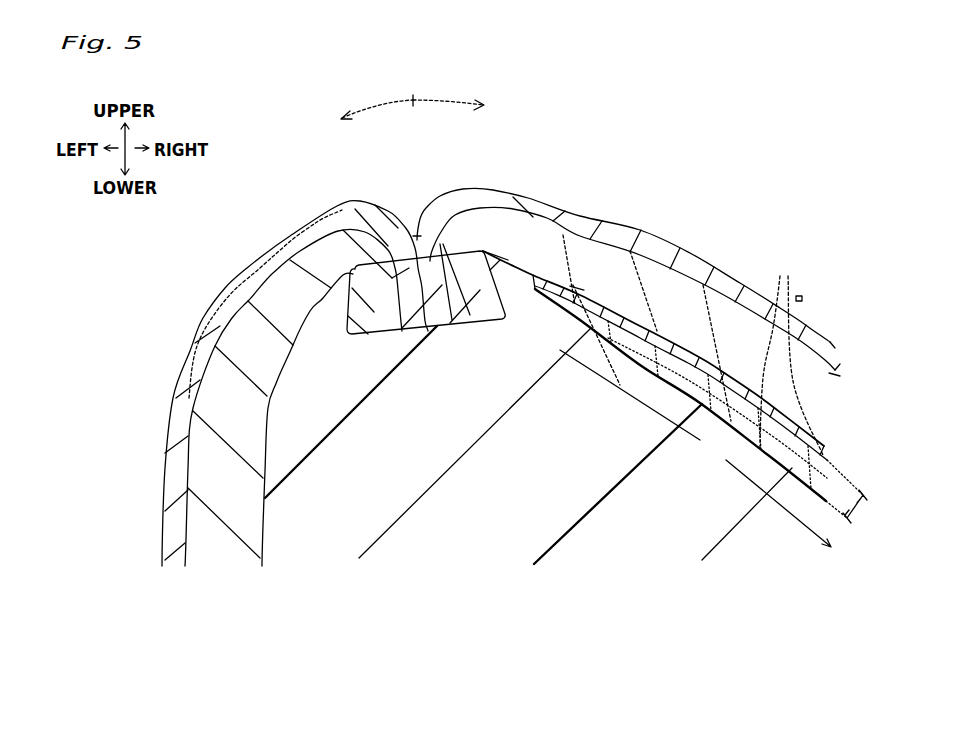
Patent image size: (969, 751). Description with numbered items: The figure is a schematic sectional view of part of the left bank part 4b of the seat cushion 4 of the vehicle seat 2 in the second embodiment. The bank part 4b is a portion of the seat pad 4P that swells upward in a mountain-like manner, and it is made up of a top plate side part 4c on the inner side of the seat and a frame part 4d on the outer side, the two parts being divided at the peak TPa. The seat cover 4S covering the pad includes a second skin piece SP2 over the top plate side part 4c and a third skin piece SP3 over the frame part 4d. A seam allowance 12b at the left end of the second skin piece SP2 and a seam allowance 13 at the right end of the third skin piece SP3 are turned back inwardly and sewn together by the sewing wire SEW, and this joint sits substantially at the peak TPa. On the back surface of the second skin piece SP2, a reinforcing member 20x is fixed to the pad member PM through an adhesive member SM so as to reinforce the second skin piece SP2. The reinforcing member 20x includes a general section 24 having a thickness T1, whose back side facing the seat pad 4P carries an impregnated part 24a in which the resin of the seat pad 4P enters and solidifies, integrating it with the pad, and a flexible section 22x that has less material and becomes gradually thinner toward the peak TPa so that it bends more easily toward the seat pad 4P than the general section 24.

The vehicle seat 2 is at (295, 357).
The seat cushion 4 is at (240, 200).
The bank part 4b is at (414, 115).
The top plate side part 4c is at (479, 106).
The frame part 4d is at (348, 118).
The seat cover 4S is at (462, 377).
The seat pad 4P is at (657, 527).
The third skin piece SP3 is at (197, 358).
The second skin piece SP2 is at (725, 285).
The pad member PM is at (210, 457).
The sewing wire SEW is at (437, 285).
The seam allowance 13 is at (352, 282).
The peak TPa is at (412, 205).
The seam allowance 12b is at (473, 292).
The adhesive member SM is at (577, 290).
The flexible section 22x is at (533, 275).
The reinforcing member 20x is at (791, 356).
The general section 24 is at (695, 455).
The impregnated part 24a is at (834, 468).
The thickness T1 is at (849, 509).